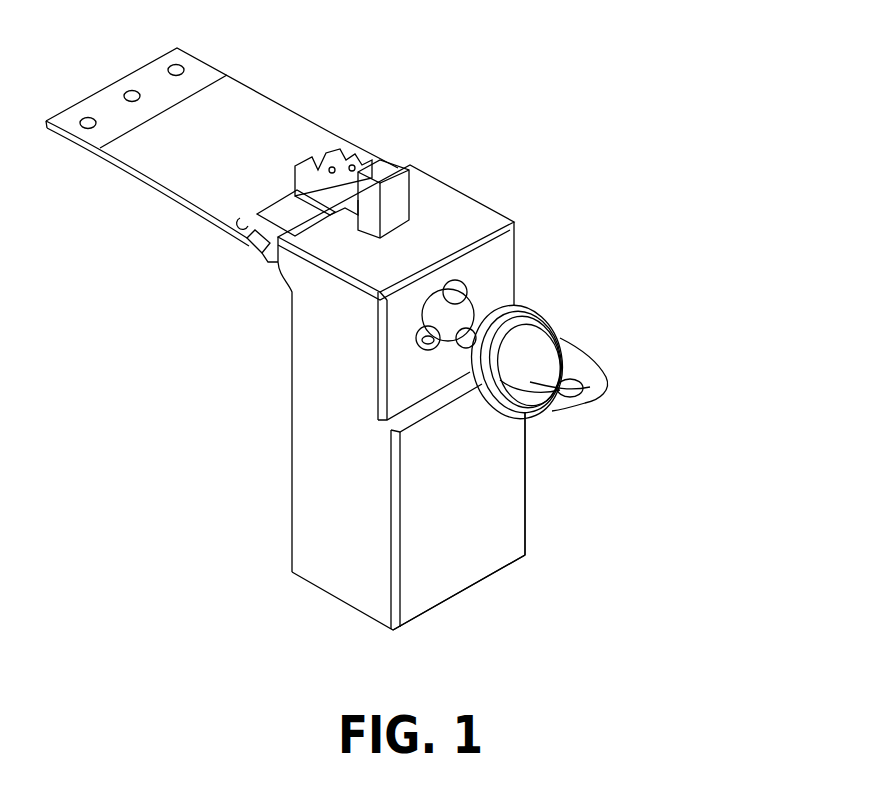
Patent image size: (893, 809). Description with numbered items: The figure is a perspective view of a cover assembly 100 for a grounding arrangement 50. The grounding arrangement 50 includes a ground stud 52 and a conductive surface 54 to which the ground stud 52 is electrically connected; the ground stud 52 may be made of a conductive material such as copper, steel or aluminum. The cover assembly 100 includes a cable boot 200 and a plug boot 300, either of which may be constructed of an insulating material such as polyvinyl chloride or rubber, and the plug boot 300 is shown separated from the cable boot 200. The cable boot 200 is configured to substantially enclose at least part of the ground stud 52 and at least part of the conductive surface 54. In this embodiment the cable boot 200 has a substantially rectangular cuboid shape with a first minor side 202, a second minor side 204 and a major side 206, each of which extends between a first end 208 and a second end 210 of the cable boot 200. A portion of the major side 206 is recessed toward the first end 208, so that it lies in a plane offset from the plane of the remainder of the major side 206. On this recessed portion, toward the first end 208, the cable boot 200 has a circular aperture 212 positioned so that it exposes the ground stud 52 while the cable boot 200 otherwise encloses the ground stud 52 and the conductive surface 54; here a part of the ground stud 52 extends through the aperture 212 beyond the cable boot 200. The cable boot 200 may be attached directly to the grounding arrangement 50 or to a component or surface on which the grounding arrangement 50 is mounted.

The grounding arrangement 50 is at (292, 75).
The conductive surface 54 is at (183, 173).
The cover assembly 100 is at (218, 548).
The cable boot 200 is at (292, 465).
The first minor side 202 is at (320, 365).
The second minor side 204 is at (527, 515).
The major side 206 is at (470, 482).
The first end 208 is at (450, 215).
The second end 210 is at (465, 593).
The aperture 212 is at (473, 294).
The ground stud 52 is at (466, 327).
The plug boot 300 is at (607, 383).